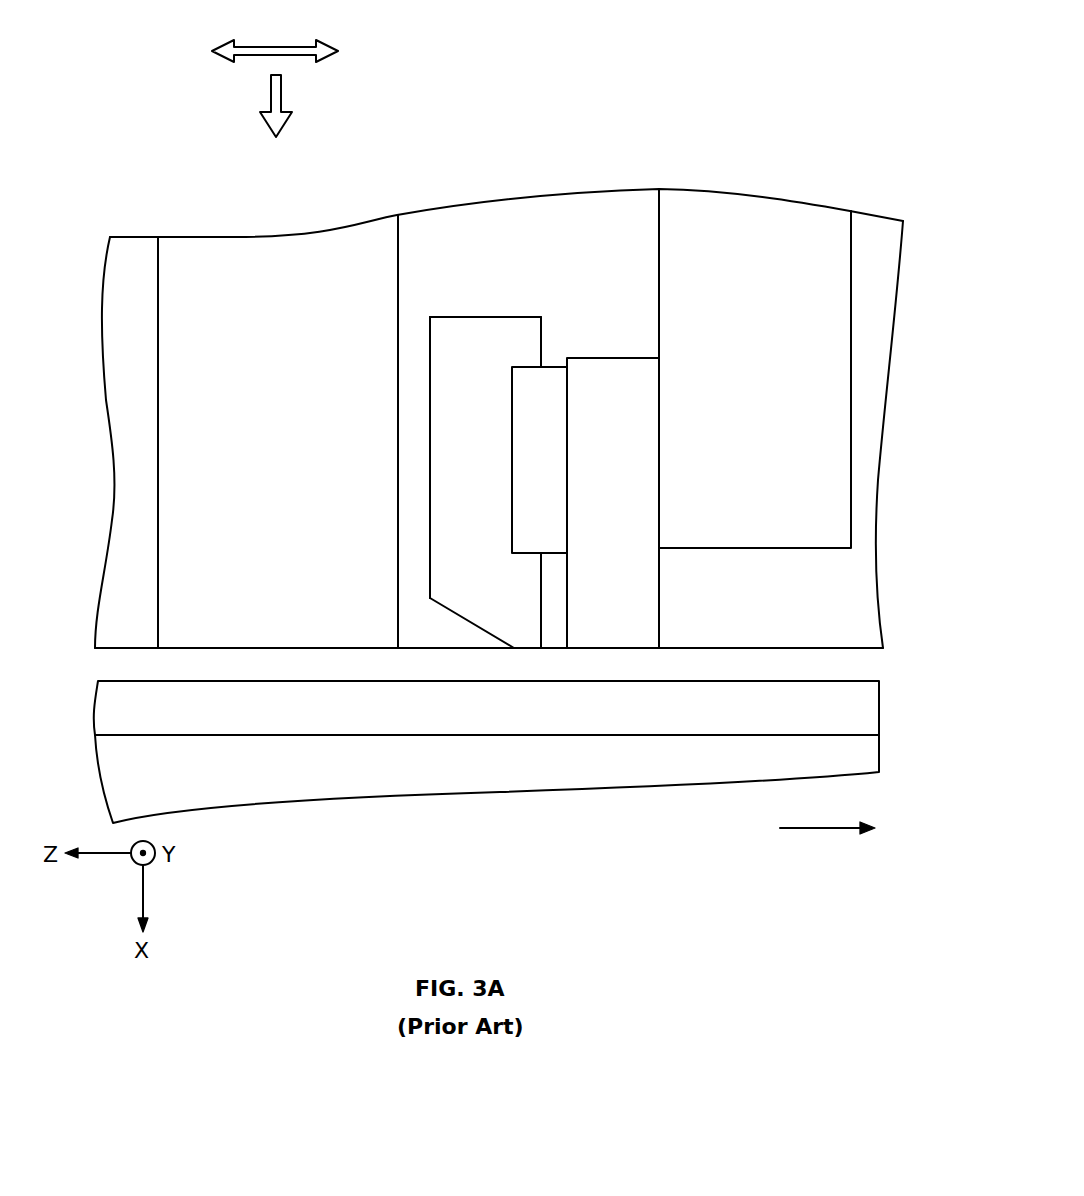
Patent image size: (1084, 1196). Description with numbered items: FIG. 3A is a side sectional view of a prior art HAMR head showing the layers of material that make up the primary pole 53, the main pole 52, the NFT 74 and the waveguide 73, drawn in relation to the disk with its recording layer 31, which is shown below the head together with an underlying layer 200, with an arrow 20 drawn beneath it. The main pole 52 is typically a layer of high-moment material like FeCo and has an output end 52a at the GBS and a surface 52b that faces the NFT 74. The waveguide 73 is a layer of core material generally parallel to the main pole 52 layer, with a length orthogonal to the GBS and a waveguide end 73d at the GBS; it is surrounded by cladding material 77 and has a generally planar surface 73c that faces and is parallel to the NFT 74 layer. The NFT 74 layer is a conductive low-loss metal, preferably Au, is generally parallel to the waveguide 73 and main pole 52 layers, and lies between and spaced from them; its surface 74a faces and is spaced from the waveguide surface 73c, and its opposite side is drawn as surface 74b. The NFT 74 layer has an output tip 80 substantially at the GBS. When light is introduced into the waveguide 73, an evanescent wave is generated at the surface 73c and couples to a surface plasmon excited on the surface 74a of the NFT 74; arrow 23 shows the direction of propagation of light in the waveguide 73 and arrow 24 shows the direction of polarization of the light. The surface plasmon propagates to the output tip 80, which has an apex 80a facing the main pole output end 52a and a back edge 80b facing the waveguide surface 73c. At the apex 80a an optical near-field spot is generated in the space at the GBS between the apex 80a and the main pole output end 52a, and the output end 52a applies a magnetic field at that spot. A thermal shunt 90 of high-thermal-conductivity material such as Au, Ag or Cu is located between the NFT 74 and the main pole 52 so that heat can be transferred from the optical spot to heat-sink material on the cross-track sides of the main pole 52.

The arrow 24 is at (311, 46).
The arrow 23 is at (268, 112).
The waveguide 73 is at (197, 246).
The cladding material 77 is at (130, 342).
The waveguide surface 73c is at (398, 496).
The near-field transducer 74 is at (522, 352).
The top surface of insulating layer 74b is at (441, 317).
The NFT surface 74a is at (430, 373).
The back edge 80b is at (430, 570).
The output tip 80 is at (458, 615).
The thermal shunt 90 is at (553, 455).
The apex 80a is at (541, 648).
The main pole surface 52b is at (570, 513).
The primary pole 53 is at (833, 277).
The main pole 52 is at (648, 606).
The waveguide end 73d is at (194, 652).
The output end 52a is at (645, 650).
The gas-bearing surface GBS is at (876, 650).
The recording layer 31 is at (866, 716).
The magnetic recording medium 200 is at (866, 755).
The medium moving direction 20 is at (810, 830).